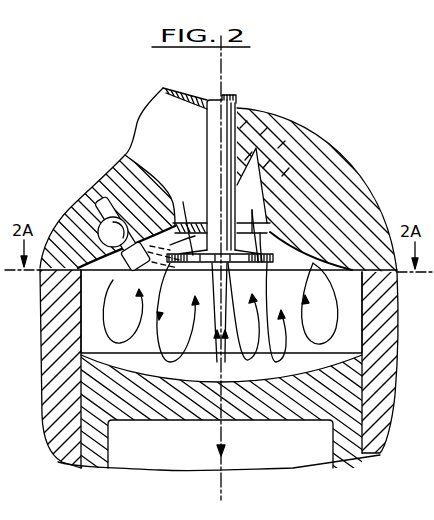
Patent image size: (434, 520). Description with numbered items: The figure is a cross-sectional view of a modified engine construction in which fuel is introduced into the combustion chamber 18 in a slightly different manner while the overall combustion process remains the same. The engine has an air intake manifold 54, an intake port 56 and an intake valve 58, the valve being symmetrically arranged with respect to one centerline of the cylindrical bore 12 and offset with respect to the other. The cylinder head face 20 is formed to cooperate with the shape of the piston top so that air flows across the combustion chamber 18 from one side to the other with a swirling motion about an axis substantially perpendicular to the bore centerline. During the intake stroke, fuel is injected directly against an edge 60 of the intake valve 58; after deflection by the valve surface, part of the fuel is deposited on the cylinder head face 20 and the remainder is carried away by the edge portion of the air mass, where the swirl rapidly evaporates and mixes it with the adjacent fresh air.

The cylindrical bore 12 is at (360, 325).
The combustion chamber 18 is at (186, 334).
The cylinder head face 20 is at (122, 262).
The air intake manifold 54 is at (166, 155).
The intake port 56 is at (262, 228).
The intake valve 58 is at (243, 264).
The edge of intake valve 60 is at (220, 312).